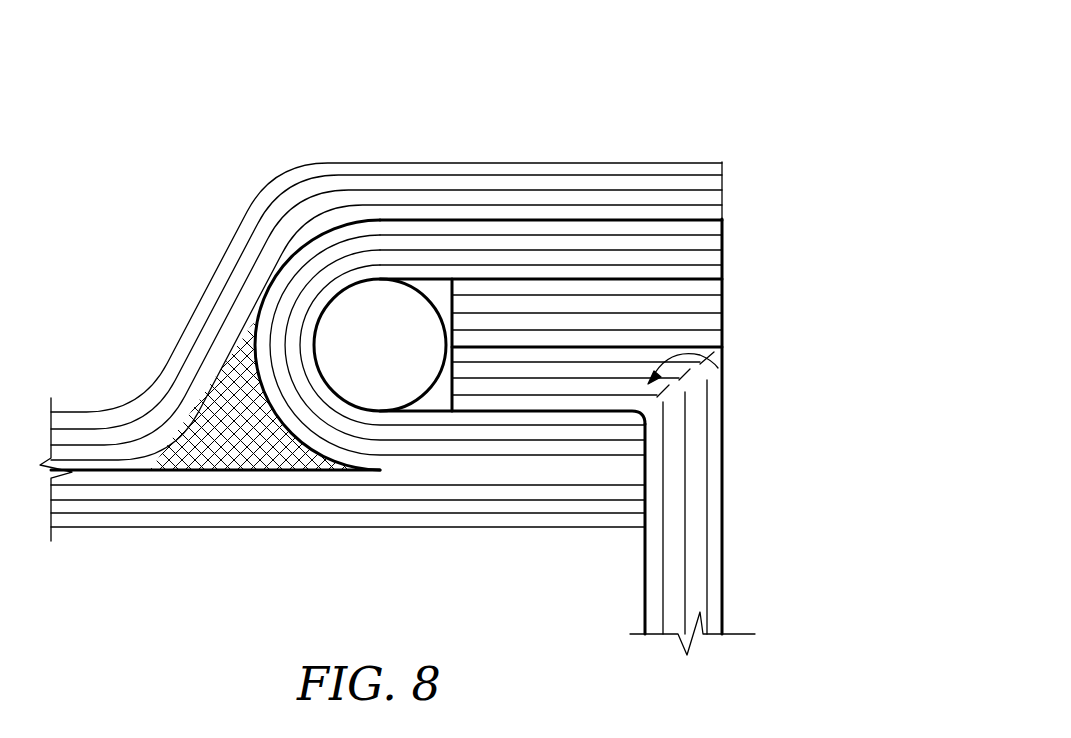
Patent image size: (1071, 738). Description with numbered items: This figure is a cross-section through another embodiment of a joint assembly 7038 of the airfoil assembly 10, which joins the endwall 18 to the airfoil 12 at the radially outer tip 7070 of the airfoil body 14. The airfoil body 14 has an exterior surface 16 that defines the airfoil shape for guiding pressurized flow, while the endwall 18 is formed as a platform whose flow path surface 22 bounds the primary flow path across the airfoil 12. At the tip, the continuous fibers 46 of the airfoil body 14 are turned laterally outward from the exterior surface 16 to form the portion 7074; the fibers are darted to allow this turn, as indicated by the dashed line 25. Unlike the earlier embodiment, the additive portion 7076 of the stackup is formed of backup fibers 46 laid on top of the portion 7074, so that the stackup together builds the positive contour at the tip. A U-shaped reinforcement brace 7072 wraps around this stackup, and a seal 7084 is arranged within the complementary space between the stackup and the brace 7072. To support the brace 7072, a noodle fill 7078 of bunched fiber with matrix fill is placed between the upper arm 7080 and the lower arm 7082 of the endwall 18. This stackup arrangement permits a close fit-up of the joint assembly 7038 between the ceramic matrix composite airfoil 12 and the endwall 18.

The airfoil assembly 10 is at (777, 127).
The airfoil 12 is at (736, 559).
The airfoil body 14 is at (700, 615).
The exterior surface 16 is at (655, 583).
The endwall 18 is at (131, 391).
The flow path surface 22 is at (178, 528).
The dashed line 25 is at (697, 377).
The continuous fibers 46 is at (707, 520).
The joint assembly 7038 is at (655, 187).
The radially outer tip 7070 is at (735, 268).
The U-shaped reinforcement brace 7072 is at (490, 264).
The portion 7074 is at (722, 344).
The additive portion 7076 is at (722, 291).
The noodle fill 7078 is at (248, 348).
The upper arm 7080 is at (383, 165).
The lower arm 7082 is at (252, 516).
The seal 7084 is at (365, 324).